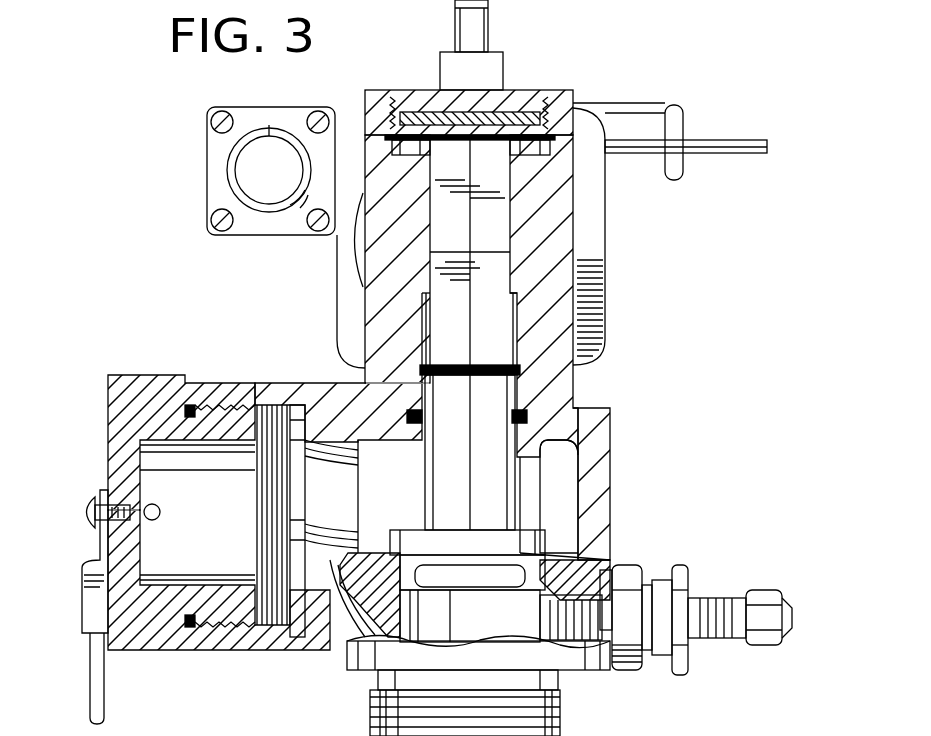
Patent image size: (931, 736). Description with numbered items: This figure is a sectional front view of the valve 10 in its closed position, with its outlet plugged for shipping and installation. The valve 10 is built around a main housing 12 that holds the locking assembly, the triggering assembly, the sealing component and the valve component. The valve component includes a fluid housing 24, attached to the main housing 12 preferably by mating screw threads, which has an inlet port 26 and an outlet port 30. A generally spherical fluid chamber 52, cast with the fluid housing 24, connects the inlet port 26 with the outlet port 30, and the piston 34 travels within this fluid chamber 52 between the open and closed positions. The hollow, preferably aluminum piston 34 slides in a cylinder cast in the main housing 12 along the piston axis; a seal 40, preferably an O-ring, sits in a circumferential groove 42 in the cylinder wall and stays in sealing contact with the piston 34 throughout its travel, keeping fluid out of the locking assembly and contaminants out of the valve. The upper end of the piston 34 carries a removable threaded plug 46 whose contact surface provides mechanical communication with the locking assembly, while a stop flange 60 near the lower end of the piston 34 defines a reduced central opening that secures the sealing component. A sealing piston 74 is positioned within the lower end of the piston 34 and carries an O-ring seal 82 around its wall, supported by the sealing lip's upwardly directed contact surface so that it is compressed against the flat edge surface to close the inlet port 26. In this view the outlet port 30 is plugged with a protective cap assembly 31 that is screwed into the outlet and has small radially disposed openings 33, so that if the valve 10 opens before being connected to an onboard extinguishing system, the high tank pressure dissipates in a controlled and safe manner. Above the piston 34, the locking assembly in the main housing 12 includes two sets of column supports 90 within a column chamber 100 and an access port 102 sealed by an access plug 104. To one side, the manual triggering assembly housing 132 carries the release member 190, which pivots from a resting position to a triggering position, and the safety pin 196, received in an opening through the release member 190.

The valve 10 is at (618, 455).
The main housing 12 is at (360, 324).
The fluid housing 24 is at (590, 491).
The inlet port 26 is at (492, 625).
The outlet port 30 is at (345, 489).
The protective cap assembly 31 is at (132, 648).
The radially disposed openings 33 is at (158, 510).
The piston 34 is at (427, 480).
The seal 40 is at (536, 419).
The groove 42 is at (406, 417).
The plug 46 is at (520, 374).
The fluid chamber 52 is at (560, 538).
The stop flange 60 is at (528, 545).
The sealing piston 74 is at (430, 585).
The O-ring seal 82 is at (480, 572).
The column supports 90 is at (440, 192).
The column chamber 100 is at (428, 322).
The access port 102 is at (402, 98).
The access plug 104 is at (425, 110).
The manual triggering assembly housing 132 is at (600, 360).
The release member 190 is at (490, 75).
The safety pin 196 is at (720, 155).